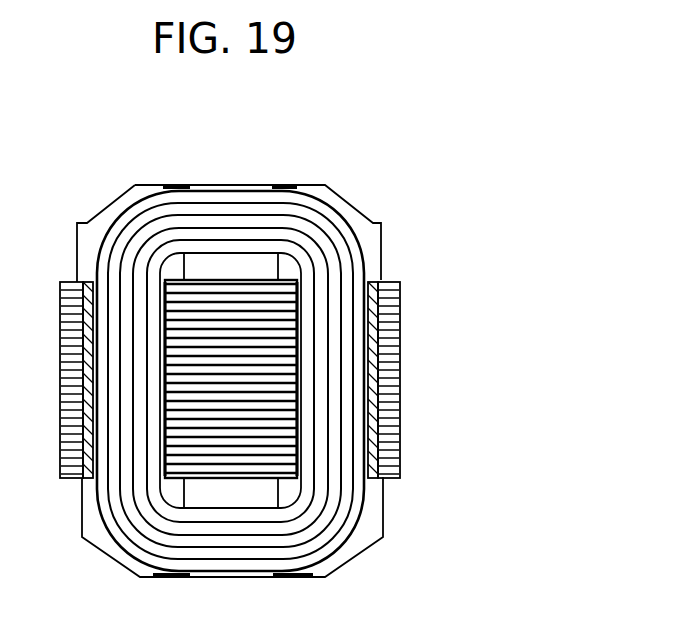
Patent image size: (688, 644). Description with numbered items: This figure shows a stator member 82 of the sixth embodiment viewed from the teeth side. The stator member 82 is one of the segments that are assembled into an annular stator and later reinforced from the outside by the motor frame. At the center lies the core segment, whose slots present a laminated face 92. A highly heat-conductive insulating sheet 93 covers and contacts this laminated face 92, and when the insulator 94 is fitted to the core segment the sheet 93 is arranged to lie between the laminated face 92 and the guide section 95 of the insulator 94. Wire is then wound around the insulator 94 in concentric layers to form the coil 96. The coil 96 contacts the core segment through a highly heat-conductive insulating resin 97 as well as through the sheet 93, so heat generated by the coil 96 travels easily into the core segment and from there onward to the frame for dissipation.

The stator member 82 is at (442, 258).
The laminated face 92 is at (400, 400).
The highly heat-conductive insulating sheet 93 is at (378, 480).
The insulator 94 is at (348, 212).
The guide section 95 is at (373, 285).
The coil 96 is at (268, 210).
The highly heat-conductive insulating resin 97 is at (208, 263).